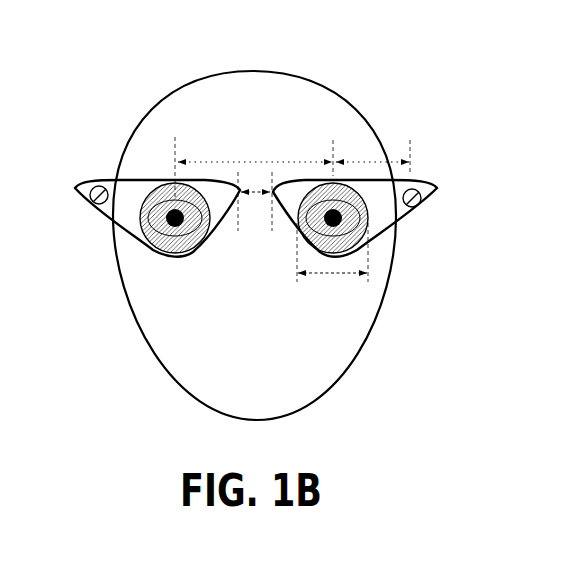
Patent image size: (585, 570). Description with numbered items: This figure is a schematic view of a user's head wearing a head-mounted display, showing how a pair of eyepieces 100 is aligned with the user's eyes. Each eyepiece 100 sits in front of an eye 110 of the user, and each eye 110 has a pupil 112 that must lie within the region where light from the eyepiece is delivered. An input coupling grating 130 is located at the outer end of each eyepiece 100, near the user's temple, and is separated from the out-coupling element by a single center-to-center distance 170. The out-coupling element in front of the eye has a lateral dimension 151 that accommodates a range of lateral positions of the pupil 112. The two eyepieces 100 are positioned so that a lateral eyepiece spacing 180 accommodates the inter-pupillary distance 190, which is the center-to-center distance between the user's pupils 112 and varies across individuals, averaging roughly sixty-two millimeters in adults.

The eyepiece 100 is at (118, 180).
The eye 110 is at (143, 248).
The pupil 112 is at (170, 258).
The input coupling grating 130 is at (420, 193).
The lateral dimension 151 is at (333, 277).
The center-to-center distance 170 is at (368, 168).
The lateral eyepiece spacing 180 is at (256, 188).
The inter-pupillary distance 190 is at (297, 168).